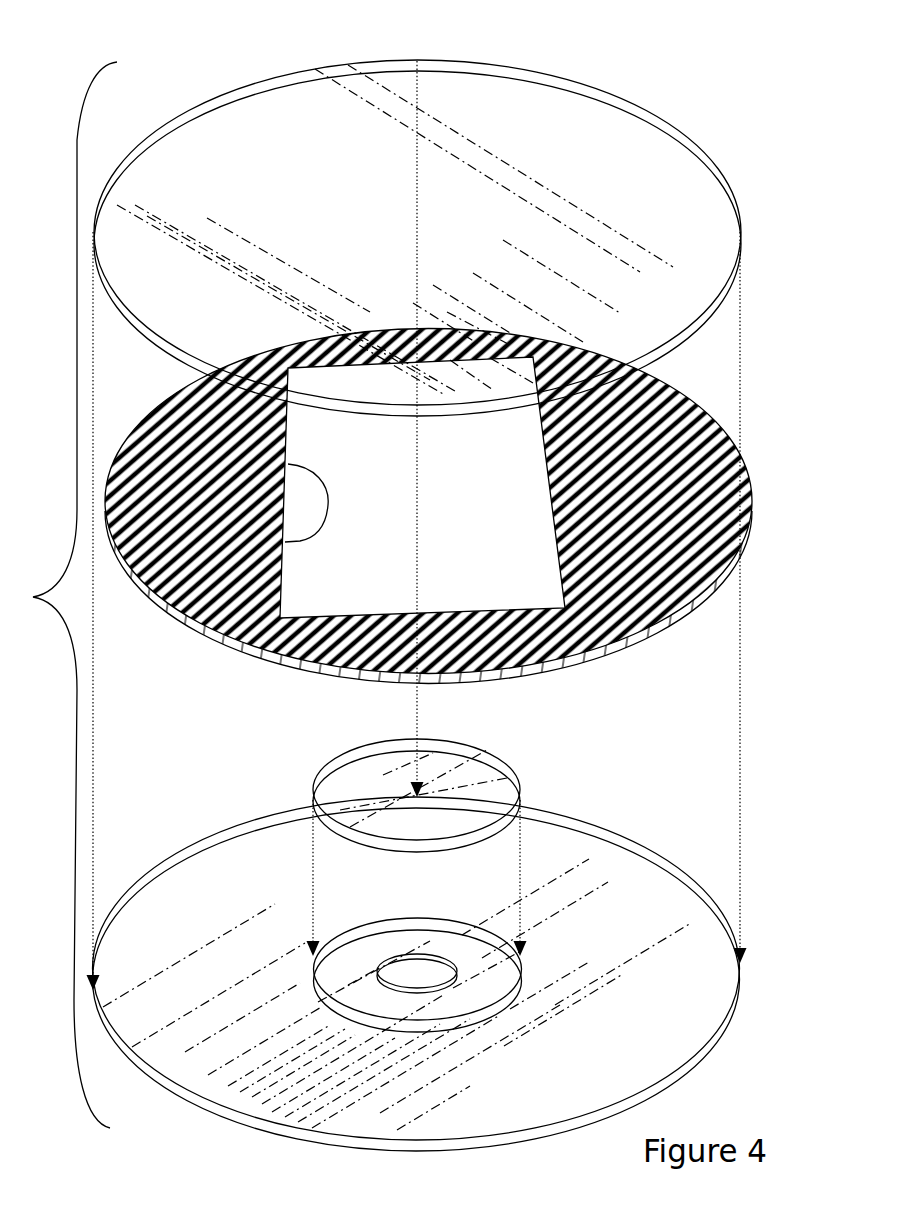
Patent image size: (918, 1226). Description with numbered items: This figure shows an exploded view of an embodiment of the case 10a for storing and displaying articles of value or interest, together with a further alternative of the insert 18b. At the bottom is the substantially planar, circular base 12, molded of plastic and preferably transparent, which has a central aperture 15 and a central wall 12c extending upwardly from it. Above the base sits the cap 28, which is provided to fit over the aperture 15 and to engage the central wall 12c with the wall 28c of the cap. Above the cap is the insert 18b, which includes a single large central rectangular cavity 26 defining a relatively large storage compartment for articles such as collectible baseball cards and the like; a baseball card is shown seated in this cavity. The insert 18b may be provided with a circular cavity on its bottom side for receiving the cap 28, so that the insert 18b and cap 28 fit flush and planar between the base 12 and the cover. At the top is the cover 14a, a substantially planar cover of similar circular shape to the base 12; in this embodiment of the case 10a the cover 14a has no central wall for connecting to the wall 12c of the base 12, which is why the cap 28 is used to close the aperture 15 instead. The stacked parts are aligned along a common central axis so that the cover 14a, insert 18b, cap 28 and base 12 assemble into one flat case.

The case 10a is at (71, 595).
The cover 14a is at (673, 108).
The insert 18b is at (702, 393).
The central rectangular cavity 26 is at (292, 466).
The cap 28 is at (477, 780).
The wall of the cap 28c is at (473, 752).
The base 12 is at (715, 1063).
The central wall 12c is at (554, 923).
The central aperture 15 is at (282, 1061).